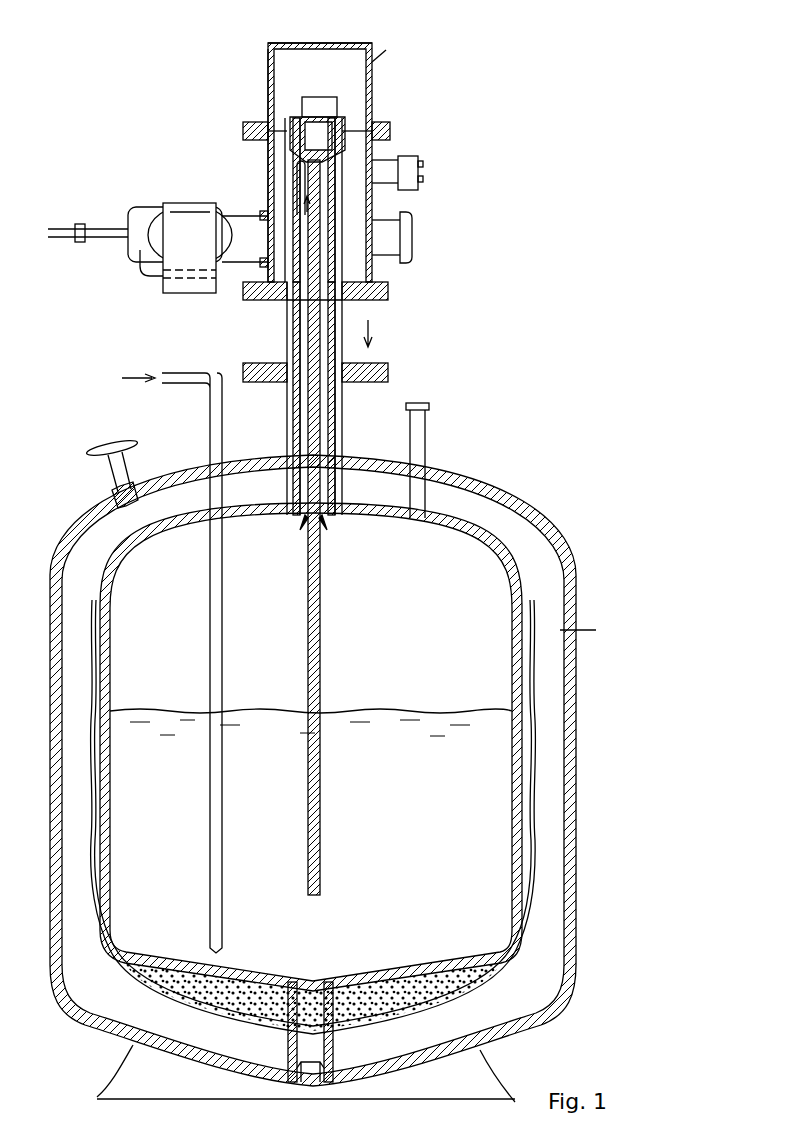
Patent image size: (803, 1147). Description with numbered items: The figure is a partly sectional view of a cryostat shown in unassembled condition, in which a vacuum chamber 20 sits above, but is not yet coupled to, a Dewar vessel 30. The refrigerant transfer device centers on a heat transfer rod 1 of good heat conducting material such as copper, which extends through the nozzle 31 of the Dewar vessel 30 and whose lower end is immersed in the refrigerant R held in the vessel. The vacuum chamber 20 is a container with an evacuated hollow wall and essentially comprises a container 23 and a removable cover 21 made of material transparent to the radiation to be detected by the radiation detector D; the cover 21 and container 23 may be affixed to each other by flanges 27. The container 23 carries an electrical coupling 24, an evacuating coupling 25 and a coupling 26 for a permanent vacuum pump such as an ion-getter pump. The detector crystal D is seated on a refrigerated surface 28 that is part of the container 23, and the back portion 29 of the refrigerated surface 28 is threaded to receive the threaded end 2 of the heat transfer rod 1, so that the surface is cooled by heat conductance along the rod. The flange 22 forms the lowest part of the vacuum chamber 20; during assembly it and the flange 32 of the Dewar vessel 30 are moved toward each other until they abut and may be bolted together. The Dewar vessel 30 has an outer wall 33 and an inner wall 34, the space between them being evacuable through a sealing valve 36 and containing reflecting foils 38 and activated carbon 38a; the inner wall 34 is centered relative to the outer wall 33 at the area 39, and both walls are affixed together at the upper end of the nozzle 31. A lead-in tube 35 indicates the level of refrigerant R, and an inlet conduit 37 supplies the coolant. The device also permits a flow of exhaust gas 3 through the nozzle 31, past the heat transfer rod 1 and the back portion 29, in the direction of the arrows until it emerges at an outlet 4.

The heat transfer rod 1 is at (320, 833).
The end of the heat transfer rod 2 is at (300, 166).
The flow of exhaust gas 3 is at (304, 520).
The outlet 4 is at (286, 392).
The radiation detector D is at (330, 105).
The vacuum chamber 20 is at (406, 87).
The removable cover 21 is at (303, 48).
The flange 22 is at (388, 292).
The container 23 is at (268, 186).
The electrical coupling 24 is at (405, 163).
The evacuating coupling 25 is at (412, 240).
The coupling for vacuum pump 26 is at (185, 212).
The flanges 27 is at (390, 131).
The refrigerated surface 28 is at (300, 122).
The back portion of the refrigerated surface 29 is at (292, 136).
The Dewar vessel 30 is at (385, 778).
The nozzle 31 is at (335, 438).
The flange 32 is at (388, 373).
The outer wall 33 is at (576, 831).
The inner wall 34 is at (512, 831).
The lead-in tube 35 is at (425, 438).
The sealing valve 36 is at (110, 448).
The inlet conduit 37 is at (212, 433).
The reflecting foils 38 is at (498, 958).
The activated carbon 38a is at (462, 994).
The centering area 39 is at (333, 1062).
The refrigerant R is at (408, 807).